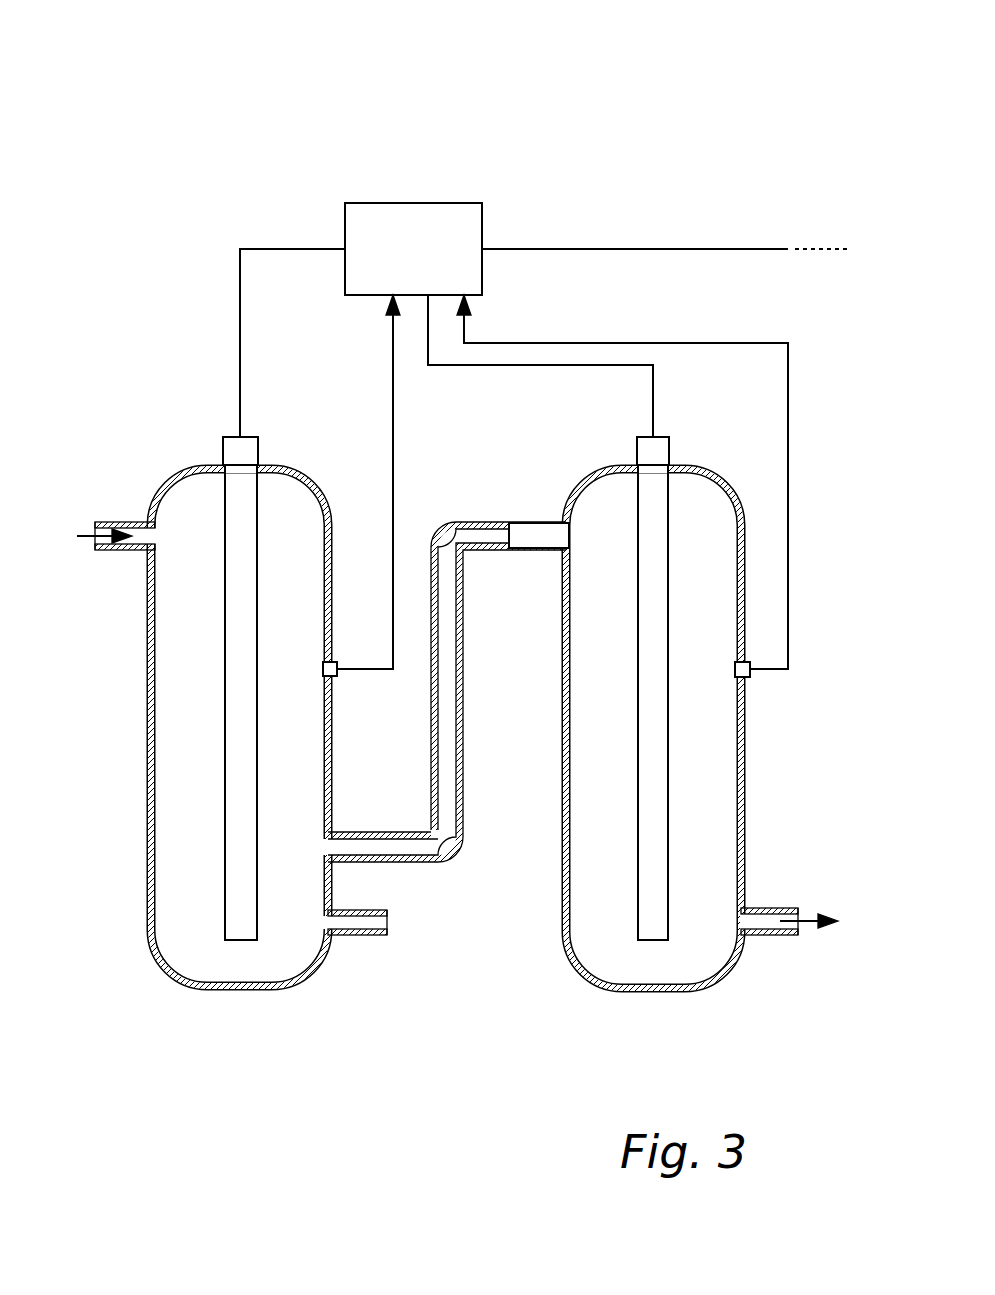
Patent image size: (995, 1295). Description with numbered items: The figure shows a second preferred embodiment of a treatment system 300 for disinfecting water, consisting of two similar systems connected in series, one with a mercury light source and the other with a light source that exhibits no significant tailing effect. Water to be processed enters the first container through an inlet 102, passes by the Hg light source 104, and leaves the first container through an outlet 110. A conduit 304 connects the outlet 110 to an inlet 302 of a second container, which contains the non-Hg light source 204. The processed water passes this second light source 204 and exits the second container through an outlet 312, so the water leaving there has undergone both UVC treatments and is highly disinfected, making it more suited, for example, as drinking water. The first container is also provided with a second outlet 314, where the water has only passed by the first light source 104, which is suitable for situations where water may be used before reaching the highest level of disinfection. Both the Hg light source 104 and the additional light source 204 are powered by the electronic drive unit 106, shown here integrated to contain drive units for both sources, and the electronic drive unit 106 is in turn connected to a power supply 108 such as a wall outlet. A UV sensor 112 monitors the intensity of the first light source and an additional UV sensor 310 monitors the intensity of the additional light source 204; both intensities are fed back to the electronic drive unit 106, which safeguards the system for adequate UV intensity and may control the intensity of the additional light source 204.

The treatment system 300 is at (563, 110).
The inlet 102 is at (88, 530).
The Hg light source 104 is at (240, 925).
The electronic drive unit 106 is at (445, 203).
The power supply 108 is at (772, 249).
The outlet 110 is at (367, 832).
The UV sensor 112 is at (337, 678).
The non-Hg light source 204 is at (657, 755).
The inlet 302 is at (537, 522).
The conduit 304 is at (463, 786).
The additional UV sensor 310 is at (750, 673).
The outlet 312 is at (792, 915).
The second outlet 314 is at (356, 938).